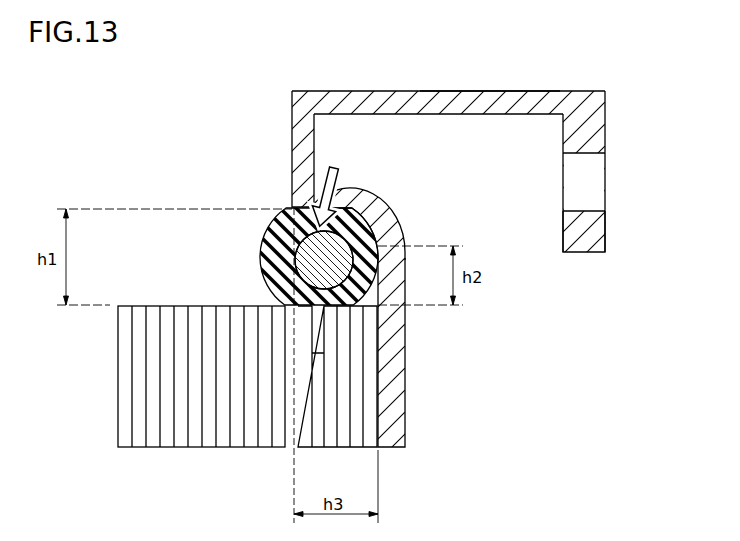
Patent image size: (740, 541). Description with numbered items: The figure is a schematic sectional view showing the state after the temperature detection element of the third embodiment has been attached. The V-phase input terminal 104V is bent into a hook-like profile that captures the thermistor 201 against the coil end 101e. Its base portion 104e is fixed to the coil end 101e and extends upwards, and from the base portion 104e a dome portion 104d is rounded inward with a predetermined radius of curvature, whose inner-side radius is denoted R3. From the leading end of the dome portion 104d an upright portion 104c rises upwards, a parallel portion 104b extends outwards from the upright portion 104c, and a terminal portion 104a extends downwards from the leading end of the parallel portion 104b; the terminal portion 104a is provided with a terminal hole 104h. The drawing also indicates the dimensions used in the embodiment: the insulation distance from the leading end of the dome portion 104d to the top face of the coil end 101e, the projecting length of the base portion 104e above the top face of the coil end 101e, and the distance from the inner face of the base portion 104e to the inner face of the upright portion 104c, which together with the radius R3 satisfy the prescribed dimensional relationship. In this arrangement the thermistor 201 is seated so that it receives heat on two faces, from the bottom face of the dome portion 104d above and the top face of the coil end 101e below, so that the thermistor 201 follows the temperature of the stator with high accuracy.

The parallel portion 104b is at (445, 105).
The V-phase input terminal 104V is at (510, 103).
The upright portion 104c is at (303, 147).
The dome portion 104d is at (380, 222).
The base portion 104e is at (392, 397).
The terminal hole 104h is at (588, 183).
The terminal portion 104a is at (590, 233).
The thermistor 201 is at (352, 212).
The radius of curvature of the dome portion at the inner side R3 is at (328, 250).
The coil end 101e is at (140, 375).